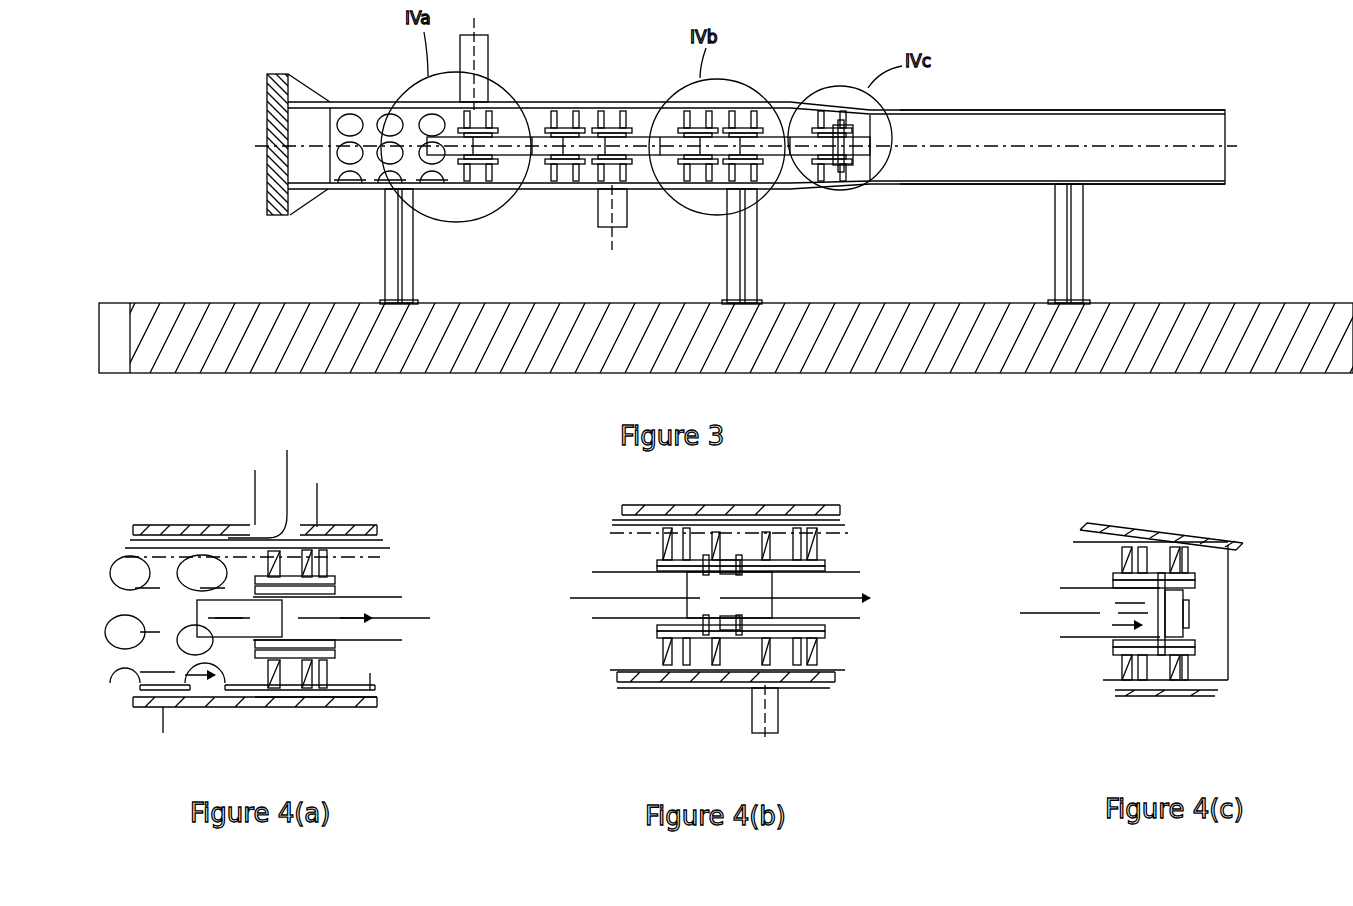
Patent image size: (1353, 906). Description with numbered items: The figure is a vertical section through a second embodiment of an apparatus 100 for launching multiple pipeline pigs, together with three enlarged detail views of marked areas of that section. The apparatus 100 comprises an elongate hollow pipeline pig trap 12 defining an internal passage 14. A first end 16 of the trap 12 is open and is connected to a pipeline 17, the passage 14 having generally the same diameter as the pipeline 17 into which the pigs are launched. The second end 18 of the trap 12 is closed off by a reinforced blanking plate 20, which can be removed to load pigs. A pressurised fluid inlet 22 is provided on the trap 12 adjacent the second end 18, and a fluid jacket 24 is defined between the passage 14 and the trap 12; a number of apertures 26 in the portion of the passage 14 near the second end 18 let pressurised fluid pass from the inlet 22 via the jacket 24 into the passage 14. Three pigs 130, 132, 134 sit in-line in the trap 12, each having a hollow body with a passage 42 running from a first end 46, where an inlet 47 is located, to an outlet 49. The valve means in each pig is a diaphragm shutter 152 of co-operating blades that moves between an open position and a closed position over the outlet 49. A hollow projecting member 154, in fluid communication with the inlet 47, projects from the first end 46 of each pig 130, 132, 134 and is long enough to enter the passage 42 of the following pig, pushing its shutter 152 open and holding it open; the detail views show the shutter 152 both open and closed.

In FIG. 3, the apparatus 100 is at (587, 85).
In FIG. 3, the pipeline pig trap 12 is at (624, 101).
In FIG. 3, the internal passage 14 is at (538, 178).
In FIG. 3, the first end 16 is at (858, 187).
In FIG. 3, the pipeline 17 is at (1036, 109).
In FIG. 3, the second end 18 is at (340, 192).
In FIG. 3, the reinforced blanking plate 20 is at (282, 220).
In FIG. 3, the pressurised fluid inlet 22 is at (492, 53).
In FIG. 3, the fluid jacket 24 is at (540, 100).
In FIG. 3, the apertures 26 is at (388, 116).
In FIG. 4A, the apertures 26 is at (105, 612).
In FIG. 3, the pig 130 is at (790, 157).
In FIG. 4C, the pig 130 is at (1072, 682).
In FIG. 3, the pig 132 is at (648, 188).
In FIG. 4B, the pig 132 is at (612, 645).
In FIG. 3, the pig 134 is at (517, 163).
In FIG. 4A, the pig 134 is at (370, 692).
In FIG. 3, the diaphragm shutter 152 is at (841, 112).
In FIG. 4B, the diaphragm shutter 152 is at (708, 620).
In FIG. 4C, the diaphragm shutter 152 is at (1170, 550).
In FIG. 4A, the projecting member 154 is at (245, 595).
In FIG. 4B, the projecting member 154 is at (742, 580).
In FIG. 4A, the passage 42 is at (398, 630).
In FIG. 4B, the passage 42 is at (610, 613).
In FIG. 4C, the passage 42 is at (1070, 630).
In FIG. 4A, the first end 46 is at (250, 643).
In FIG. 4B, the first end 46 is at (770, 630).
In FIG. 4A, the inlet 47 is at (247, 598).
In FIG. 4A, the outlet 49 is at (374, 679).
In FIG. 4B, the outlet 49 is at (733, 623).
In FIG. 4C, the outlet 49 is at (1187, 603).